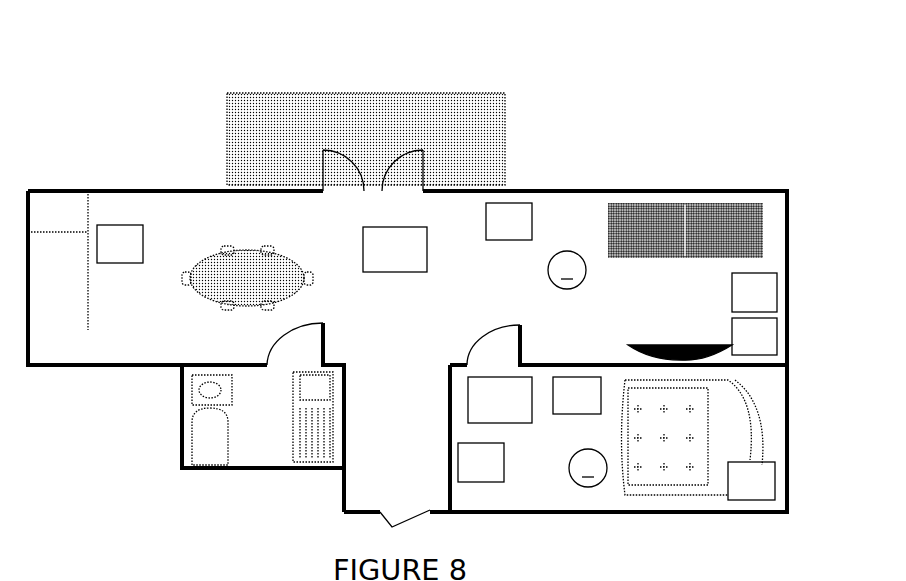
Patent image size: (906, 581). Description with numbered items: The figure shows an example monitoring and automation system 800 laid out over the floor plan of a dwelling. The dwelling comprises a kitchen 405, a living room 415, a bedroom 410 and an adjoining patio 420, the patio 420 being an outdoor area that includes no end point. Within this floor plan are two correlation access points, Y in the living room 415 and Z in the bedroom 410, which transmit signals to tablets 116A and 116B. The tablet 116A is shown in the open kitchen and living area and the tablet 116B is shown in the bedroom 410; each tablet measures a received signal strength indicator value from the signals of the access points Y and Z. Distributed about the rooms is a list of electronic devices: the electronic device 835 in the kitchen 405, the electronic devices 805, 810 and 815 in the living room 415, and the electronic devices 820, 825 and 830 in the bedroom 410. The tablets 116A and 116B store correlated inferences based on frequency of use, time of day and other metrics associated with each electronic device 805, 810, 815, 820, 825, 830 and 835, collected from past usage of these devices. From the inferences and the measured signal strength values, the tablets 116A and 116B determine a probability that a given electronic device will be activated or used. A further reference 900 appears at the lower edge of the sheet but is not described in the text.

The monitoring and automation system 800 is at (556, 105).
The next figure reference 900 is at (588, 580).
The patio 420 is at (313, 133).
The kitchen 405 is at (211, 228).
The living room 415 is at (666, 319).
The bedroom 410 is at (552, 458).
The electronic device 835 is at (134, 253).
The tablet 116A is at (414, 258).
The electronic device 805 is at (523, 230).
The electronic device 810 is at (768, 301).
The electronic device 815 is at (768, 345).
The tablet 116B is at (519, 408).
The electronic device 820 is at (591, 404).
The electronic device 825 is at (495, 471).
The electronic device 830 is at (765, 490).